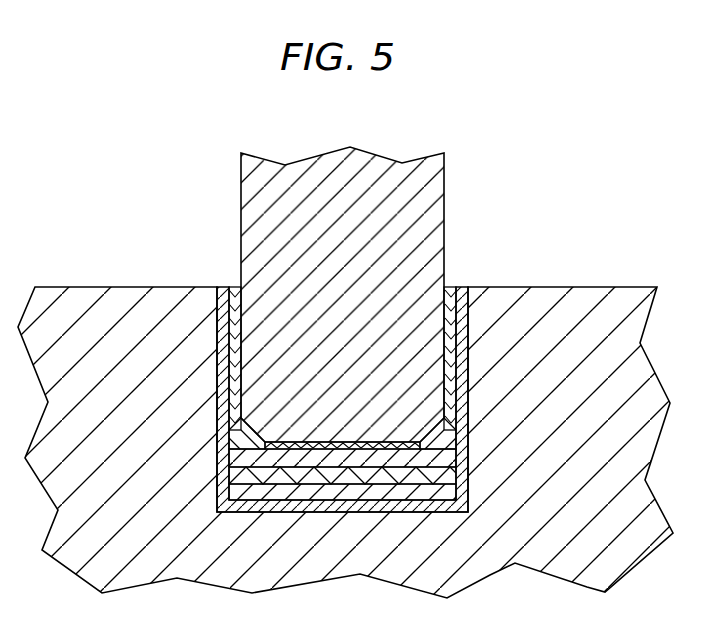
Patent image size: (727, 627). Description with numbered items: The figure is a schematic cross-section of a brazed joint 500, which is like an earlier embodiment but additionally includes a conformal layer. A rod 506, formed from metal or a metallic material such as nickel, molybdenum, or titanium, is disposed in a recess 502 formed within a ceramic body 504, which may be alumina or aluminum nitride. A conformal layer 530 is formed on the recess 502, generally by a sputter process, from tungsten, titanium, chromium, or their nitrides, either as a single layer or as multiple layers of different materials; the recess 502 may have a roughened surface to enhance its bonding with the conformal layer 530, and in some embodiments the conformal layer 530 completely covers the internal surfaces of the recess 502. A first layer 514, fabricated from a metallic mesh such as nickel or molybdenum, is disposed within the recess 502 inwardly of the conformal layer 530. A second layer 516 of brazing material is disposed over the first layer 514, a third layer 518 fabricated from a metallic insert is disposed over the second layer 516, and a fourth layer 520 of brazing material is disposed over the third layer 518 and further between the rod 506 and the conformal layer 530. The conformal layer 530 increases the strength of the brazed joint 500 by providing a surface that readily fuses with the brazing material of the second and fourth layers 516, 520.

The brazed joint 500 is at (175, 114).
The recess 502 is at (468, 365).
The ceramic body 504 is at (592, 298).
The rod 506 is at (428, 223).
The first layer 514 is at (396, 490).
The second layer 516 is at (447, 478).
The third layer 518 is at (447, 460).
The fourth layer 520 is at (447, 450).
The conformal layer 530 is at (458, 332).